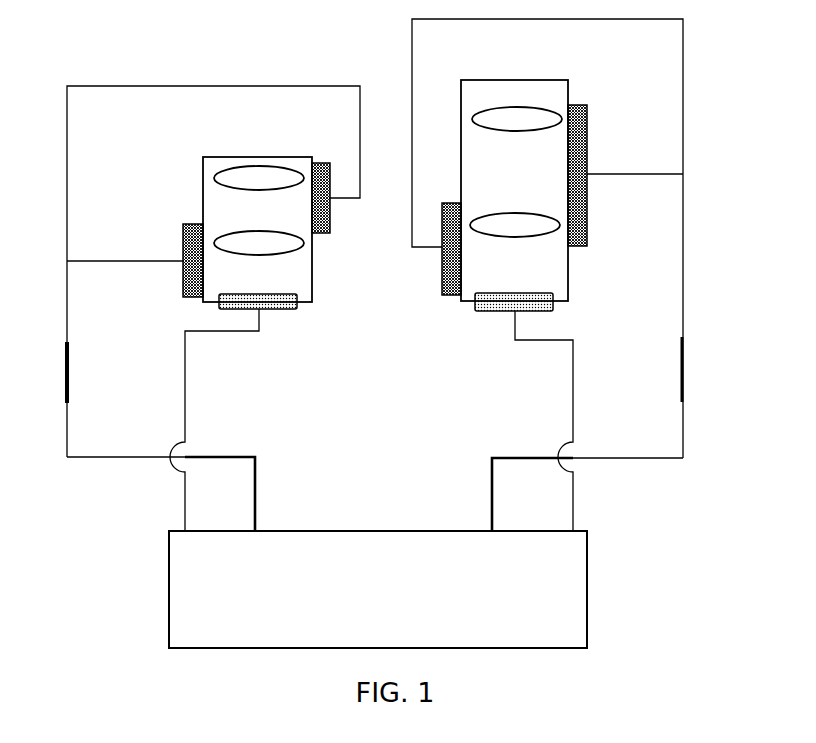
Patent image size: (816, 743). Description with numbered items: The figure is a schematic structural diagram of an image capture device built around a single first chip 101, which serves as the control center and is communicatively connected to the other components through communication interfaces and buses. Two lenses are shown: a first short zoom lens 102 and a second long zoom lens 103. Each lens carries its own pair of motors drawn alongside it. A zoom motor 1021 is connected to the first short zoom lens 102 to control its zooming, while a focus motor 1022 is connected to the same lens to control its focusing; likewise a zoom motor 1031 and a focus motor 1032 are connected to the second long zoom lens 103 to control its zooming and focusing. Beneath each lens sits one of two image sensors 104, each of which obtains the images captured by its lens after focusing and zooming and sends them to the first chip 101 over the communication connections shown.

The first chip 101 is at (169, 595).
The first short zoom lens 102 is at (230, 157).
The zoom motor 1021 is at (332, 233).
The focus motor 1022 is at (183, 290).
The second long zoom lens 103 is at (505, 80).
The zoom motor 1031 is at (587, 127).
The focus motor 1032 is at (442, 290).
The image sensor 104 is at (288, 292).